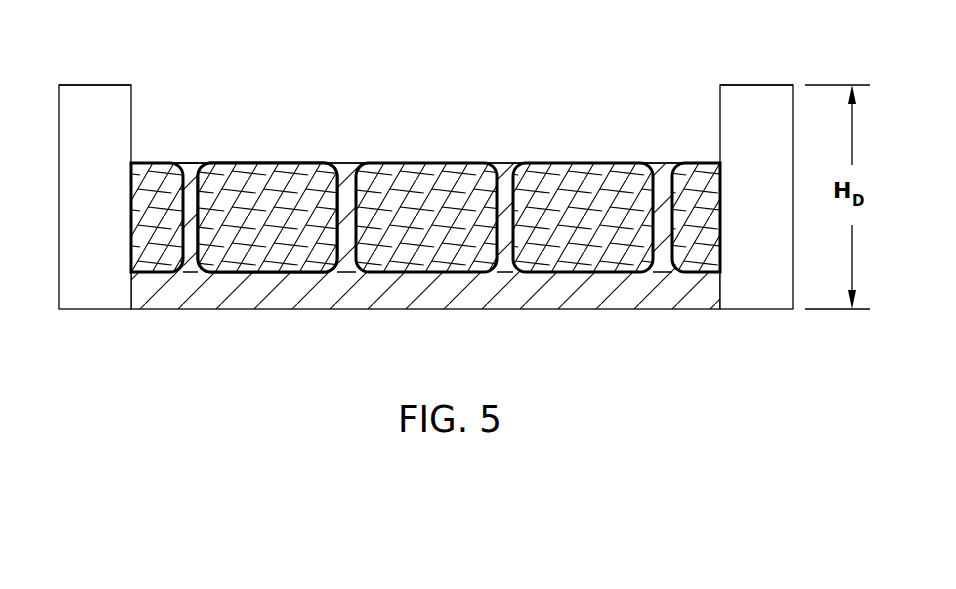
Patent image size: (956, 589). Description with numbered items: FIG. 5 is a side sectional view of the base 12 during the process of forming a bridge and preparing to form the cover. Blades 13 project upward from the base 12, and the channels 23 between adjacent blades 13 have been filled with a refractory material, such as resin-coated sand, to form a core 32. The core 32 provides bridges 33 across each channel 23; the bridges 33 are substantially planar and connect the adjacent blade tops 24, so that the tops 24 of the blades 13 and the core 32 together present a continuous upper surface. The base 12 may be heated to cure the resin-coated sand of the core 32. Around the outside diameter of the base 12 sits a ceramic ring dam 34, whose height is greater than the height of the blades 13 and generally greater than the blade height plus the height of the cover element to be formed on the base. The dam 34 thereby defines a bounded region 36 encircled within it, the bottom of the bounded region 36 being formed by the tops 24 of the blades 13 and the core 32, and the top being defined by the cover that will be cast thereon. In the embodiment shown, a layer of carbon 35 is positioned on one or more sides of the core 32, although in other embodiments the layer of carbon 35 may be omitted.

The base 12 is at (598, 295).
The blades 13 is at (502, 167).
The channels 23 is at (273, 135).
The blade tops 24 is at (187, 162).
The core 32 is at (265, 252).
The bridges 33 is at (426, 162).
The ceramic ring dam 34 is at (759, 97).
The layer of carbon 35 is at (422, 270).
The bounded region 36 is at (648, 46).